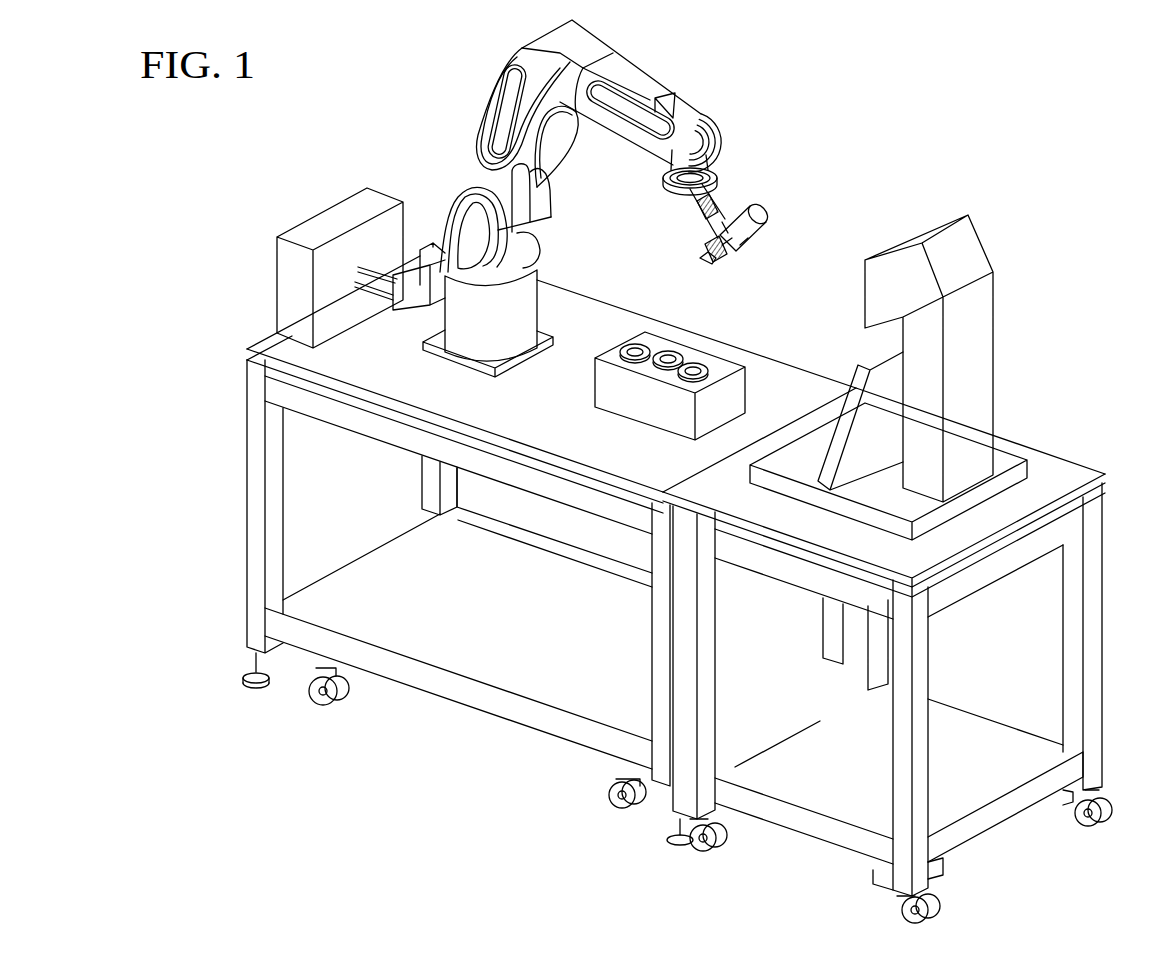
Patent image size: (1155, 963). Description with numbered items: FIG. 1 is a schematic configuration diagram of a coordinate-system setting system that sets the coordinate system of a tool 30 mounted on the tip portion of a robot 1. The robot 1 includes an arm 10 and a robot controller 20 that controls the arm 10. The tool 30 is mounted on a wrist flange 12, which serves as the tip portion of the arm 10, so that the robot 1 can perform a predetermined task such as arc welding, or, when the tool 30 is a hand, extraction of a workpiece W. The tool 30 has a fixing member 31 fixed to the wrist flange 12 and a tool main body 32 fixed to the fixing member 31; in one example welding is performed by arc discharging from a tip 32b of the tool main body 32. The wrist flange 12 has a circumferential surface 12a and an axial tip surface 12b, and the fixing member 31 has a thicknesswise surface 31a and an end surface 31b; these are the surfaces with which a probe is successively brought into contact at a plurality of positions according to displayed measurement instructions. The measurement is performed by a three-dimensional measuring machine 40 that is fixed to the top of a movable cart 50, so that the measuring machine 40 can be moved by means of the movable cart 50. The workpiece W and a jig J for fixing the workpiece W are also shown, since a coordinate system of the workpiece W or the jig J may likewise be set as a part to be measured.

The robot 1 is at (471, 90).
The arm 10 is at (668, 78).
The wrist flange 12 is at (708, 162).
The circumferential surface 12a is at (665, 176).
The axial tip surface 12b is at (672, 190).
The robot controller 20 is at (333, 215).
The tool 30 is at (788, 201).
The fixing member 31 is at (700, 213).
The thicknesswise surface 31a is at (720, 213).
The end surface 31b is at (715, 240).
The tool main body 32 is at (750, 230).
The tip 32b is at (700, 267).
The 3D measuring machine 40 is at (978, 343).
The movable cart 50 is at (1070, 455).
The workpiece W is at (690, 358).
The jig J is at (747, 393).